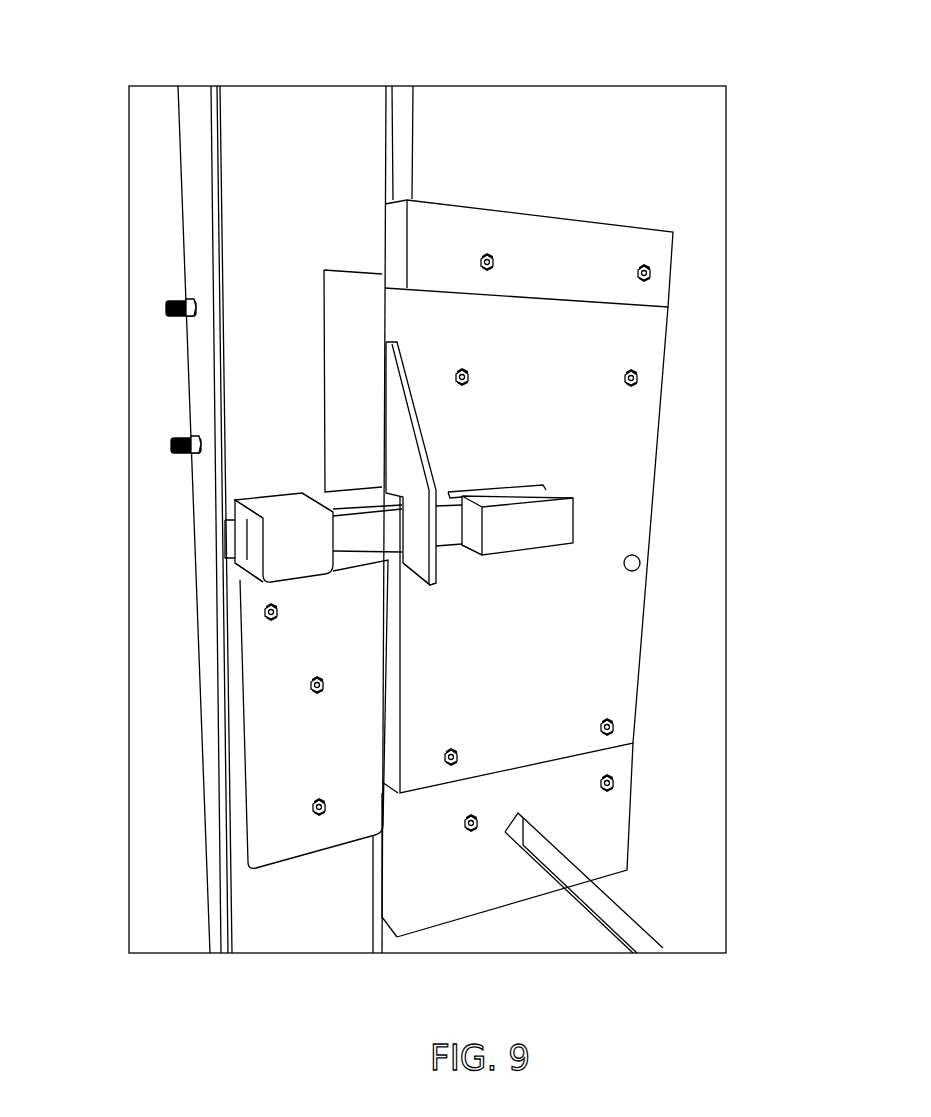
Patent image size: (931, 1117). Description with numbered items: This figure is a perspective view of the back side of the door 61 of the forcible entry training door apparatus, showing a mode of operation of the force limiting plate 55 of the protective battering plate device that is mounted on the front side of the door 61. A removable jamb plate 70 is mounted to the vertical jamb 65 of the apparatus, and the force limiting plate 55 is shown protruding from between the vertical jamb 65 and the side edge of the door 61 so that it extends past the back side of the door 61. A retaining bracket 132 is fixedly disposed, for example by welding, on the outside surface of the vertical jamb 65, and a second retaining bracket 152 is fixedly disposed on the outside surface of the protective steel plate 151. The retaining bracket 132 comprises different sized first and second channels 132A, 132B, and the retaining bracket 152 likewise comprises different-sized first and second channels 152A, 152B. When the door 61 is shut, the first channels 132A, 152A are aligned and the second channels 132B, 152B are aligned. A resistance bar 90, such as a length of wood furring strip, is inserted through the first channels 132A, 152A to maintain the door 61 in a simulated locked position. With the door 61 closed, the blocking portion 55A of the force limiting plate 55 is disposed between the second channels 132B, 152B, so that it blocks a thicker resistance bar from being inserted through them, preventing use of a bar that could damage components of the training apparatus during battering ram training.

The force limiting plate 55 is at (395, 343).
The blocking portion 55A is at (397, 558).
The door 61 is at (515, 142).
The vertical jamb 65 is at (238, 340).
The removable jamb plate 70 is at (270, 737).
The resistance bar 90 is at (362, 497).
The retaining bracket 132 is at (283, 505).
The first channel 132A is at (233, 515).
The second channel 132B is at (253, 552).
The protective steel plate 151 is at (647, 250).
The retaining bracket 152 is at (520, 515).
The first channel 152A is at (458, 493).
The second channel 152B is at (472, 541).